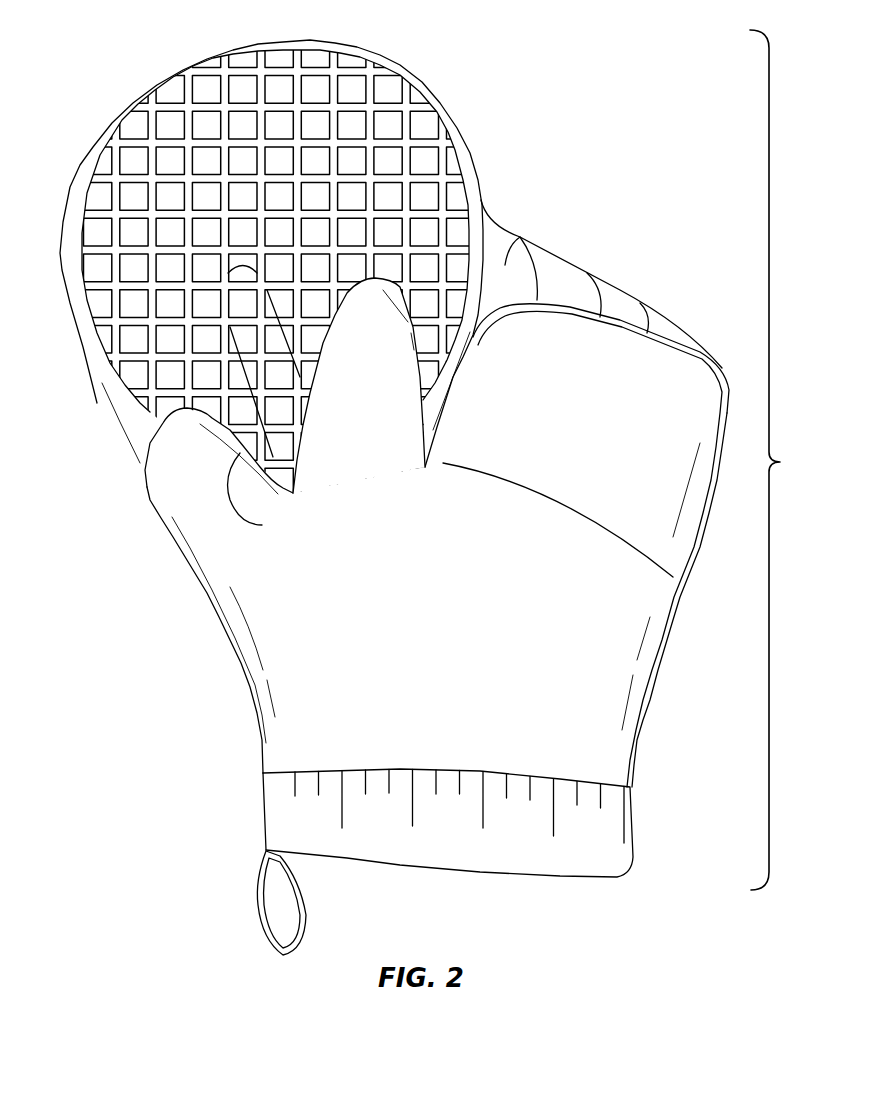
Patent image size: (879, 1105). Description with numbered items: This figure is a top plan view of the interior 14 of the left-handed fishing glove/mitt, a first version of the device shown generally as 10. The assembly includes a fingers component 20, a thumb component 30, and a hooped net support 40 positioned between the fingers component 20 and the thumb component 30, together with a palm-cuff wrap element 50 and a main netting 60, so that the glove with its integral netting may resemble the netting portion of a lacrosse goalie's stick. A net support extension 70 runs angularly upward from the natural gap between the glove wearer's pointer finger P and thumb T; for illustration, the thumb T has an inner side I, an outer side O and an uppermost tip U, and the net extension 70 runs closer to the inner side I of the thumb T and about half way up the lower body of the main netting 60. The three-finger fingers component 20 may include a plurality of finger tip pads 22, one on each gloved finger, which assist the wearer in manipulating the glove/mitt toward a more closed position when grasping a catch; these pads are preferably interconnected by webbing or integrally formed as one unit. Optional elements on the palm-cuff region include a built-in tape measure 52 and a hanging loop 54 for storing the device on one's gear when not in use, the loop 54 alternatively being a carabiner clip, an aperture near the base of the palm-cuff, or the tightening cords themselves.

The fishing glove/mitt device 10 is at (782, 460).
The glove/mitt interior 14 is at (456, 638).
The fingers component 20 is at (583, 409).
The finger tip pads 22 is at (620, 297).
The thumb component 30 is at (113, 440).
The hooped net support 40 is at (470, 150).
The palm-cuff wrap element 50 is at (645, 829).
The tape measure 52 is at (275, 822).
The hanging loop 54 is at (262, 915).
The main netting 60 is at (360, 145).
The net support extension 70 is at (247, 338).
The thumb T is at (212, 492).
The pointer finger P is at (377, 383).
The inner side of thumb I is at (251, 495).
The uppermost tip of thumb U is at (155, 425).
The outer side of thumb O is at (157, 508).